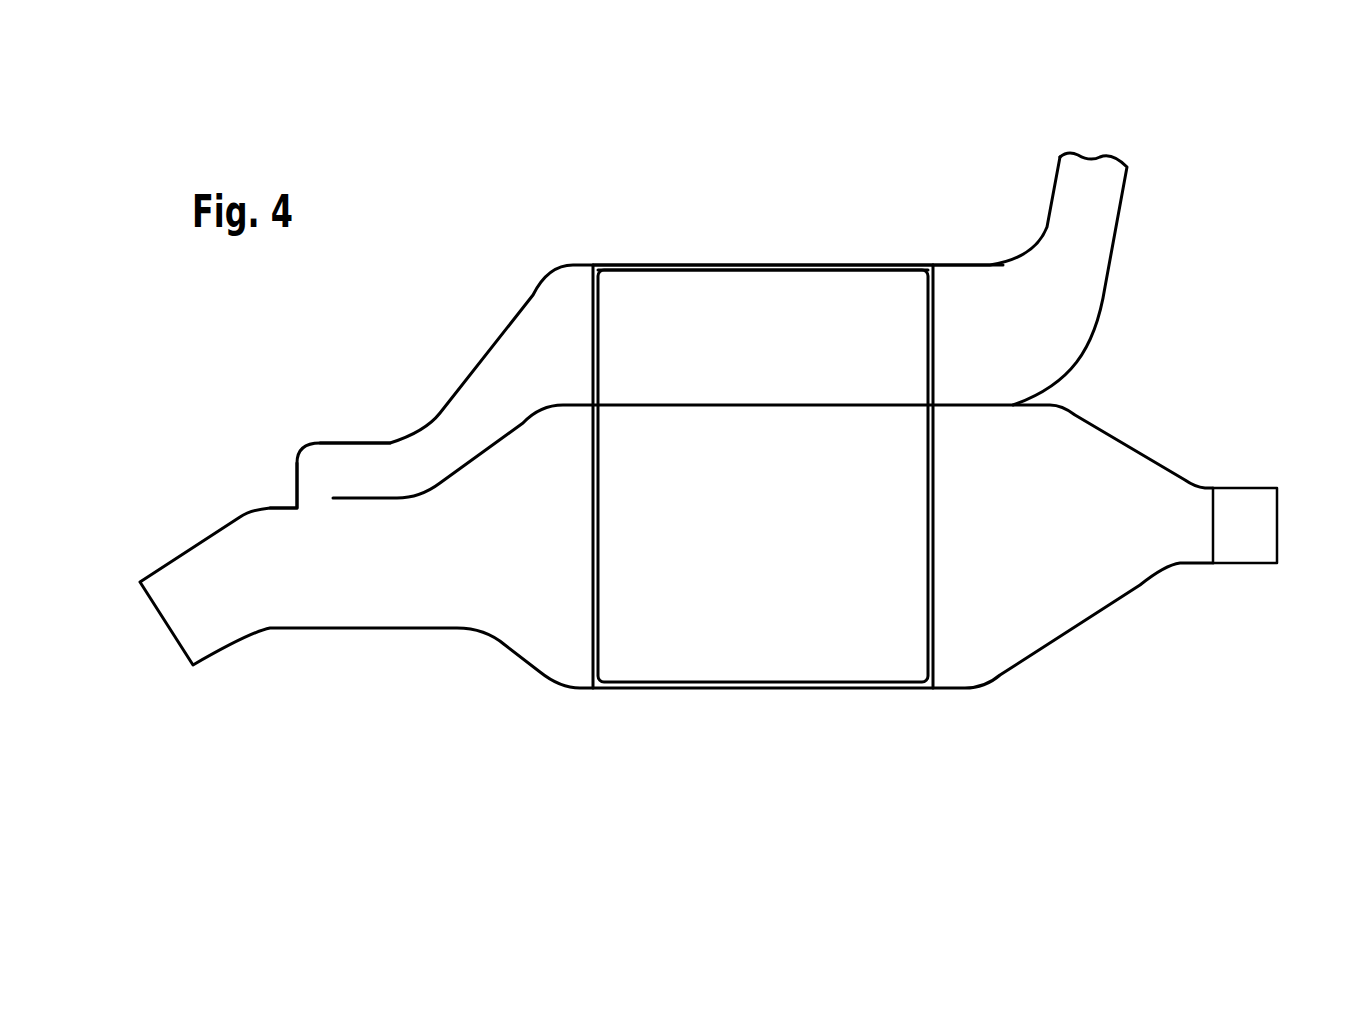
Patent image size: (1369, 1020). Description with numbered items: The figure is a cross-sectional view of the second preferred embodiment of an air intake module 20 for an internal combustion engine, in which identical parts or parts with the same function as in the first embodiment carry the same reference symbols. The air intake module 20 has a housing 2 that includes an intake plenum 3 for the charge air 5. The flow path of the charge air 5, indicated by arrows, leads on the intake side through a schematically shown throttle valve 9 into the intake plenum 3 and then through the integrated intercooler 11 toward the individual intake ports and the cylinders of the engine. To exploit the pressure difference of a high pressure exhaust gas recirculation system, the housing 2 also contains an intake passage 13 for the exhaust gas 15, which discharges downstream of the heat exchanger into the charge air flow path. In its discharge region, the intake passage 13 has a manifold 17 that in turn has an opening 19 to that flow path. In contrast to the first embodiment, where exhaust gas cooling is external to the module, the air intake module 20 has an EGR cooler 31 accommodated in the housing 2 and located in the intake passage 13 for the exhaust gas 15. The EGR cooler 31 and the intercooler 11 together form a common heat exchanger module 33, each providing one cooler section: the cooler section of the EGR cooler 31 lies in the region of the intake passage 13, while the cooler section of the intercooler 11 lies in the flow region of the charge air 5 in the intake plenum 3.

The housing 2 is at (953, 262).
The intake plenum 3 is at (1057, 635).
The charge air 5 is at (1303, 522).
The throttle valve 9 is at (1243, 540).
The intercooler 11 is at (757, 652).
The intake passage 13 is at (1078, 284).
The exhaust gas 15 is at (1102, 132).
The manifold 17 is at (405, 440).
The opening 19 is at (320, 507).
The air intake module 20 is at (1202, 183).
The EGR cooler 31 is at (722, 295).
The common heat exchanger module 33 is at (808, 263).